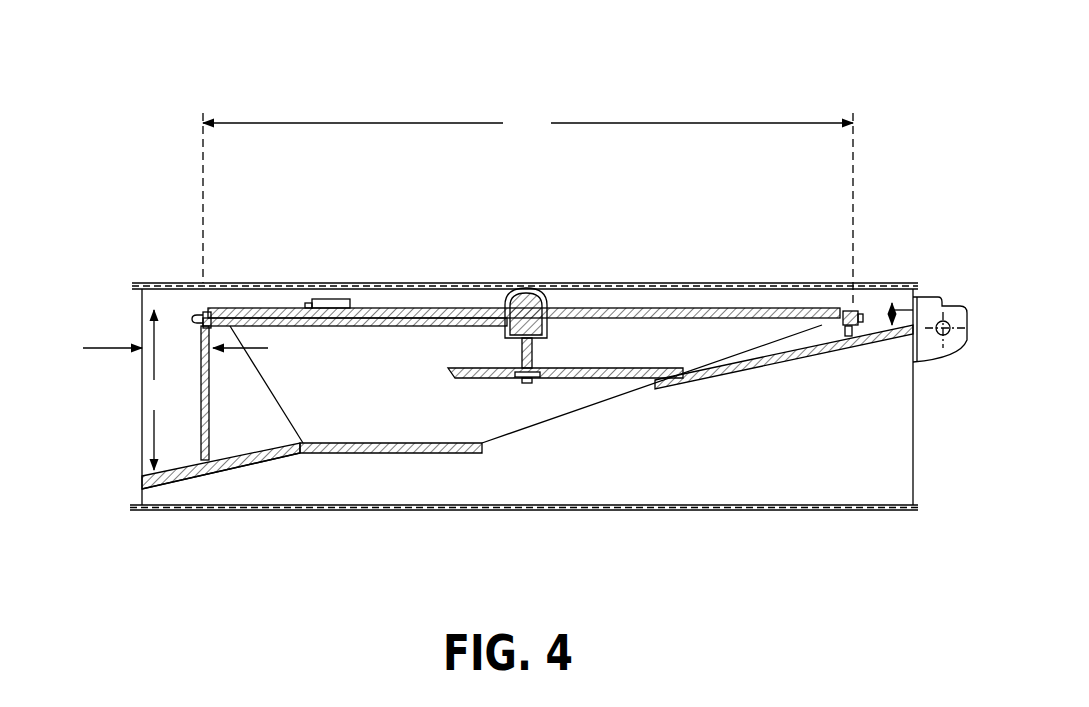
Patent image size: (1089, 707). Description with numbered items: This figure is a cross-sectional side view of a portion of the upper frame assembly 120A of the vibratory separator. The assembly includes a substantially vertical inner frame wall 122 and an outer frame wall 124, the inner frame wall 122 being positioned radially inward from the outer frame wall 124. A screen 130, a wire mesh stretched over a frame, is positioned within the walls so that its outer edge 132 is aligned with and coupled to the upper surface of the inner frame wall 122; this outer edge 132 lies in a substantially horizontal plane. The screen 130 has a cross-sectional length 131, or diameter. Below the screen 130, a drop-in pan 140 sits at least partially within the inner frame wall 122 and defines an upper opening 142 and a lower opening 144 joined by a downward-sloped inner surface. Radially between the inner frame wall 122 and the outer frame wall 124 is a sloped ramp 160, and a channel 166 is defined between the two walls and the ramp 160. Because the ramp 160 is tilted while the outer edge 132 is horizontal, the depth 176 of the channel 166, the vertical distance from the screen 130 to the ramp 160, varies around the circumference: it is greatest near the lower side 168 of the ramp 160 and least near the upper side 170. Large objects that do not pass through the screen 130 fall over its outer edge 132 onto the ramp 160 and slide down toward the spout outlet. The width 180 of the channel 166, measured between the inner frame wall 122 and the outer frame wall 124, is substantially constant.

The upper frame assembly 120A is at (243, 88).
The inner frame wall 122 is at (210, 395).
The outer frame wall 124 is at (140, 452).
The screen 130 is at (730, 308).
The cross-sectional length of the screen 131 is at (528, 208).
The outer edge of the screen 132 is at (862, 313).
The drop-in pan 140 is at (565, 415).
The upper opening 142 is at (420, 327).
The lower opening 144 is at (455, 455).
The ramp 160 is at (186, 448).
The channel 166 is at (178, 316).
The lower side of the ramp 168 is at (160, 490).
The upper side of the ramp 170 is at (898, 341).
The depth of the channel 176 is at (1030, 311).
The width of the channel 180 is at (108, 348).